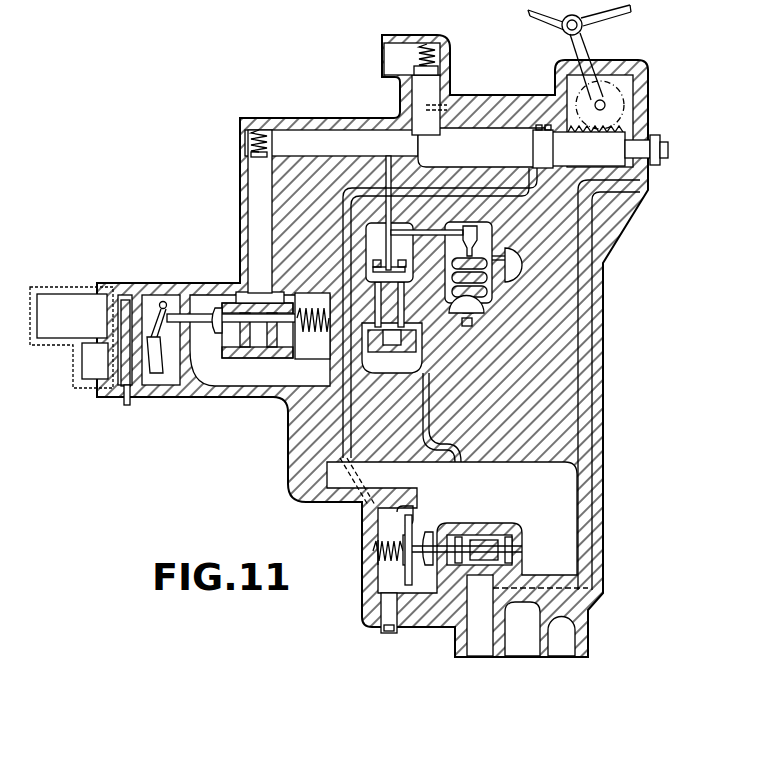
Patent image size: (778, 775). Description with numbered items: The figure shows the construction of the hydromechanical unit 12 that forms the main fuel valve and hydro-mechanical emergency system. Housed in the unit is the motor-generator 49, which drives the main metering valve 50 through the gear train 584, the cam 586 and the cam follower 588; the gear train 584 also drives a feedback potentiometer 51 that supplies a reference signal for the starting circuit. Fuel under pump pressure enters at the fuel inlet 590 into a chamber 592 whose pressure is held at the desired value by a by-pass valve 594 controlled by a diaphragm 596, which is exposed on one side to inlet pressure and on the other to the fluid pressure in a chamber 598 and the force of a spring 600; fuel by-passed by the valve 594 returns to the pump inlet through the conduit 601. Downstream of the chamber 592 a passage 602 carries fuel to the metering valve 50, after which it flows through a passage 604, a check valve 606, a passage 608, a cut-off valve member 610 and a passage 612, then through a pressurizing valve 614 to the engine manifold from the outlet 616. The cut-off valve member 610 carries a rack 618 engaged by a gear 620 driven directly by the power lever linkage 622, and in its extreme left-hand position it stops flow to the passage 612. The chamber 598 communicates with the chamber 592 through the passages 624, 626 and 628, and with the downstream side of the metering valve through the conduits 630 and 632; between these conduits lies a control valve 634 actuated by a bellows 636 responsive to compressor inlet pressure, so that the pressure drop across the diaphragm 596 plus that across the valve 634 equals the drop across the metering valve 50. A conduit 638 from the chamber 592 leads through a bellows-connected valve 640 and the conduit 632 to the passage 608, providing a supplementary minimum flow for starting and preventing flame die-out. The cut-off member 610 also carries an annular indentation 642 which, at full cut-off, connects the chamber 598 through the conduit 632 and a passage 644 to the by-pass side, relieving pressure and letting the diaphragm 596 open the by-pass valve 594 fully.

The hydromechanical unit 12 is at (278, 58).
The motor-generator 49 is at (82, 330).
The feedback potentiometer 51 is at (104, 368).
The main metering valve 50 is at (220, 334).
The gear train 584 is at (127, 300).
The cam 586 is at (155, 374).
The cam follower 588 is at (167, 302).
The fuel inlet 590 is at (567, 613).
The chamber 592 is at (560, 495).
The by-pass valve 594 is at (513, 552).
The diaphragm 596 is at (410, 524).
The chamber 598 is at (383, 522).
The spring 600 is at (372, 556).
The conduit 601 is at (485, 643).
The passage 602 is at (402, 486).
The passage 604 is at (274, 202).
The check valve 606 is at (247, 132).
The passage 608 is at (330, 157).
The cut-off valve member 610 is at (458, 140).
The passage 612 is at (422, 93).
The pressurizing valve 614 is at (446, 54).
The outlet 616 is at (393, 59).
The rack 618 is at (615, 138).
The gear 620 is at (613, 98).
The power lever linkage 622 is at (583, 30).
The passage 624 is at (375, 552).
The passage 626 is at (421, 586).
The passage 628 is at (398, 632).
The conduit 630 is at (345, 367).
The conduit 632 is at (388, 172).
The control valve 634 is at (376, 264).
The bellows 636 is at (480, 295).
The conduit 638 is at (447, 470).
The valve 640 is at (401, 266).
The annular indentation 642 is at (534, 150).
The passage 644 is at (590, 333).